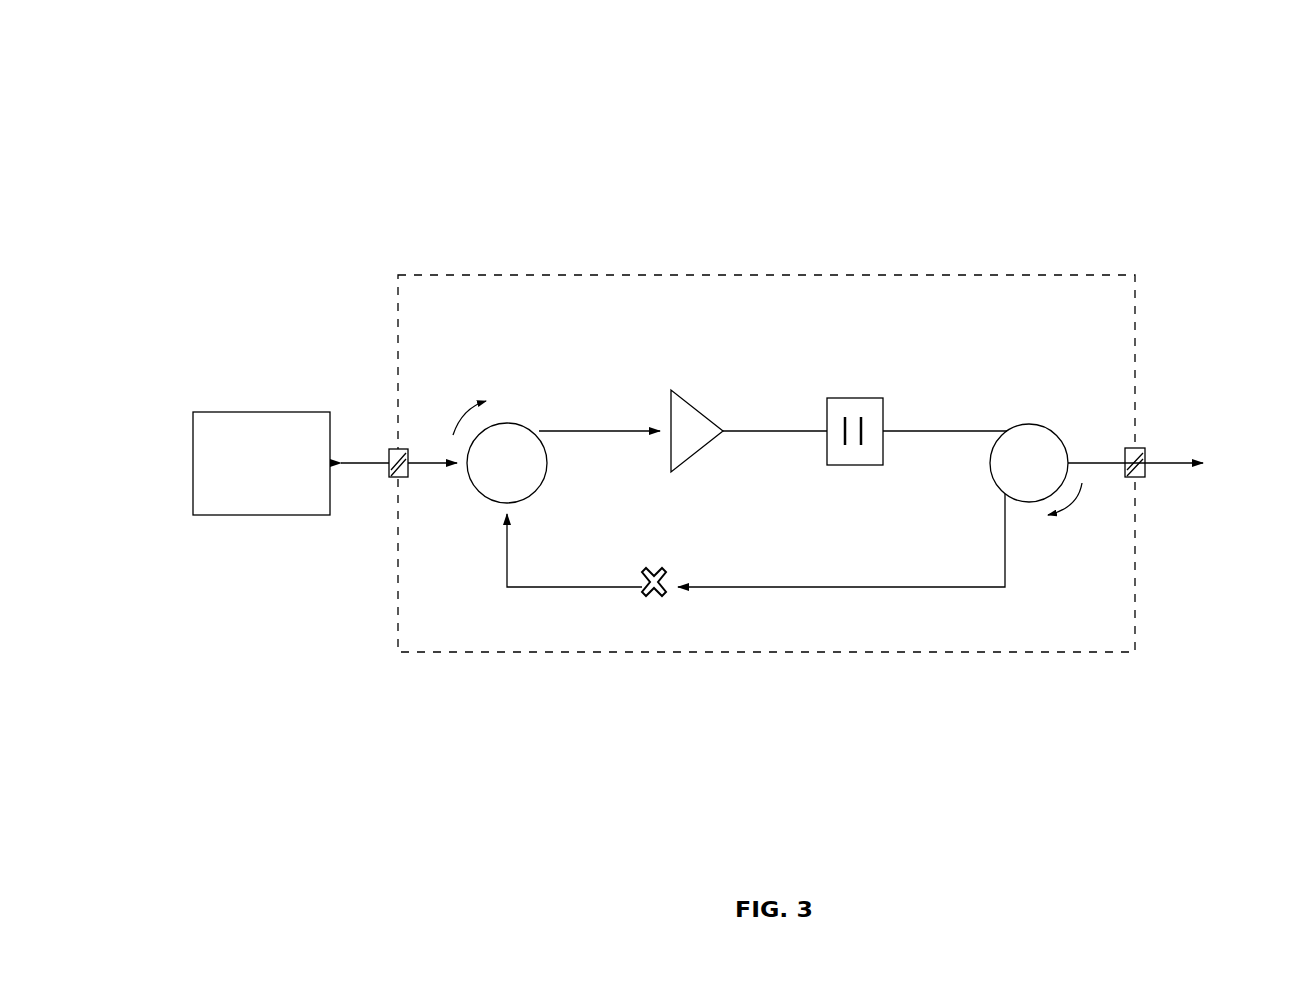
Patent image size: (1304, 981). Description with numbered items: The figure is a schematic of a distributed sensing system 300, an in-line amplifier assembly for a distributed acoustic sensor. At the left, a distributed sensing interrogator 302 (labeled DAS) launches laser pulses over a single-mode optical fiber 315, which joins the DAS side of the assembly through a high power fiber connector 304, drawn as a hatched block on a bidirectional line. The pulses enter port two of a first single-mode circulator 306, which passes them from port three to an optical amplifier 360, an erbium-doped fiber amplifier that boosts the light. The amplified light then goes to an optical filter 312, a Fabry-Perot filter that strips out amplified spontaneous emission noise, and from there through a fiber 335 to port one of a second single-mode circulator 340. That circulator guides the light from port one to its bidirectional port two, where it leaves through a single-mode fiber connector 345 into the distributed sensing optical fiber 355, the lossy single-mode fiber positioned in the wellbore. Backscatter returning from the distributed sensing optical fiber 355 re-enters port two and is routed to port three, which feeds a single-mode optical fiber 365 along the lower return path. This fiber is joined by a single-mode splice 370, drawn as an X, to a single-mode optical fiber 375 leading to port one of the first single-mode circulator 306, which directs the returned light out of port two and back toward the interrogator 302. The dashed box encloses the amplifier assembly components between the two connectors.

The distributed sensing system 300 is at (1197, 61).
The distributed sensing interrogator 302 is at (230, 412).
The high power fiber connector 304 is at (402, 449).
The first single-mode circulator 306 is at (507, 422).
The optical filter 312 is at (843, 398).
The single-mode optical fiber 315 is at (378, 465).
The second multi-mode optical fiber 335 is at (988, 430).
The second single-mode circulator 340 is at (1035, 422).
The single-mode fiber connector 345 is at (1137, 448).
The distributed sensing optical fiber 355 is at (1183, 460).
The optical amplifier 360 is at (697, 407).
The single-mode optical fiber 365 is at (897, 587).
The single-mode splice 370 is at (663, 572).
The single-mode optical fiber 375 is at (543, 586).